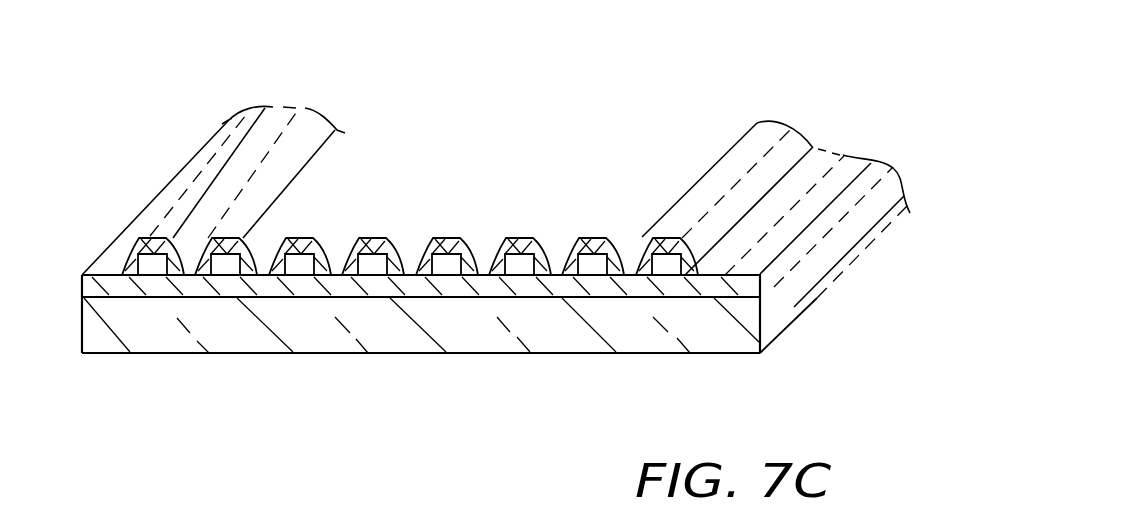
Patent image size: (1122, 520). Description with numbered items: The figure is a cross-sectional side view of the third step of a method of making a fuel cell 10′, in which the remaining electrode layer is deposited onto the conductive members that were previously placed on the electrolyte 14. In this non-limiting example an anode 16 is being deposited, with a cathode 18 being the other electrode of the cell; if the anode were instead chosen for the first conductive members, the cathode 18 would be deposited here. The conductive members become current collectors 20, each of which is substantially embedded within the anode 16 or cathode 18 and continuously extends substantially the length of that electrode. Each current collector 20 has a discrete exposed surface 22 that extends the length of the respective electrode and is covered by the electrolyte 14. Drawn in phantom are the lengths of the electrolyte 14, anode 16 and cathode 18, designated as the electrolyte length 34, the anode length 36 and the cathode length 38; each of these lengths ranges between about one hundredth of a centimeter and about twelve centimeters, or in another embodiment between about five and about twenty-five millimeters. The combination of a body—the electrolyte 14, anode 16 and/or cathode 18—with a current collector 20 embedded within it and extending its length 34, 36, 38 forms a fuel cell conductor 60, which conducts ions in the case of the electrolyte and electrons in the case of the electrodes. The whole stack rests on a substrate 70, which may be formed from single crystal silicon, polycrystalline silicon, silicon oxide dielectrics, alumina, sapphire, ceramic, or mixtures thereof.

The fuel cell 10′ is at (532, 112).
The electrolyte 14 is at (82, 290).
The anode 16 is at (214, 262).
The cathode 18 is at (143, 258).
The current collector 20 is at (248, 238).
The exposed surface 22 is at (377, 276).
The electrolyte length 34 is at (760, 273).
The anode length 36 is at (705, 65).
The cathode length 38 is at (232, 30).
The fuel cell conductor 60 is at (354, 238).
The substrate 70 is at (96, 353).